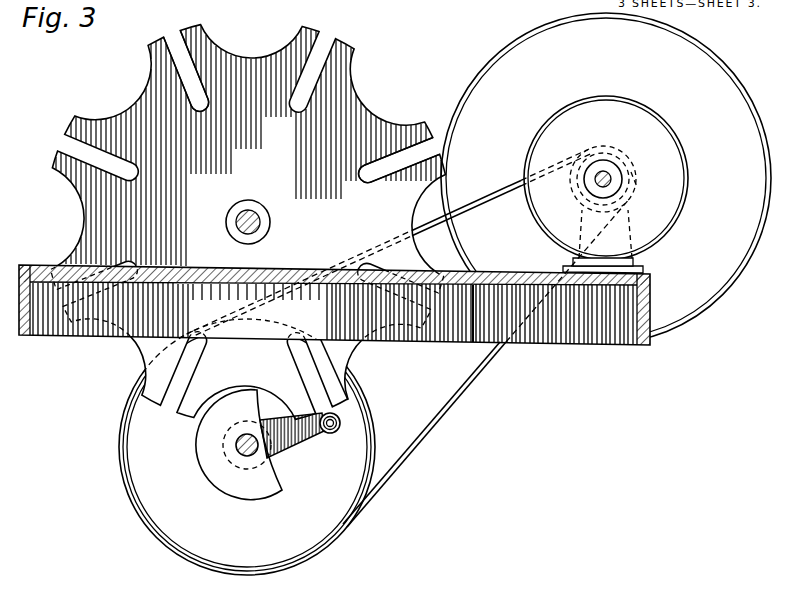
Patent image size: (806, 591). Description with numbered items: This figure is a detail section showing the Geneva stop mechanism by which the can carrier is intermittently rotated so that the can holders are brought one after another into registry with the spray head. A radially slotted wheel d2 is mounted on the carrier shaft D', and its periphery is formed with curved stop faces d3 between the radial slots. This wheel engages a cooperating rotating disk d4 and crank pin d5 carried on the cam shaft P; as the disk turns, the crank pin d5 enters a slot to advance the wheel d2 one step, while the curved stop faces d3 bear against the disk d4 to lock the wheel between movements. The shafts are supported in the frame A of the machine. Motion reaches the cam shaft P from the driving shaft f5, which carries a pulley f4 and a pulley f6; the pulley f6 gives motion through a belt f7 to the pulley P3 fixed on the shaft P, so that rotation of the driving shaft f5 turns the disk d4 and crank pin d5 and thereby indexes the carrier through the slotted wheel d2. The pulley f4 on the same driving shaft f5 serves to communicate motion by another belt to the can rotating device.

The radially slotted wheel d2 is at (248, 222).
The curved stop faces d3 is at (393, 107).
The carrier shaft D' is at (227, 226).
The frame A is at (21, 336).
The cam shaft P is at (238, 448).
The rotating disk d4 is at (207, 487).
The crank pin d5 is at (331, 434).
The pulley P3 is at (172, 538).
The pulley f4 is at (685, 182).
The driving shaft f5 is at (614, 170).
The pulley f6 is at (579, 175).
The belt f7 is at (463, 398).